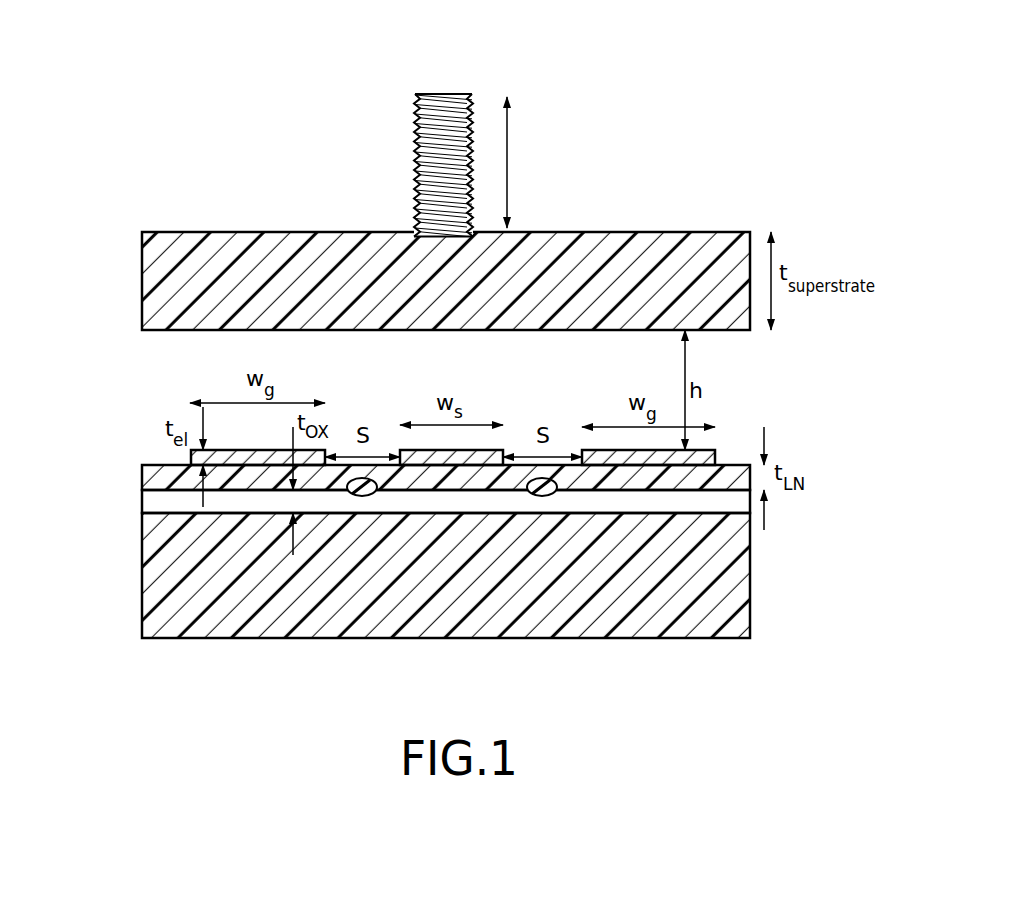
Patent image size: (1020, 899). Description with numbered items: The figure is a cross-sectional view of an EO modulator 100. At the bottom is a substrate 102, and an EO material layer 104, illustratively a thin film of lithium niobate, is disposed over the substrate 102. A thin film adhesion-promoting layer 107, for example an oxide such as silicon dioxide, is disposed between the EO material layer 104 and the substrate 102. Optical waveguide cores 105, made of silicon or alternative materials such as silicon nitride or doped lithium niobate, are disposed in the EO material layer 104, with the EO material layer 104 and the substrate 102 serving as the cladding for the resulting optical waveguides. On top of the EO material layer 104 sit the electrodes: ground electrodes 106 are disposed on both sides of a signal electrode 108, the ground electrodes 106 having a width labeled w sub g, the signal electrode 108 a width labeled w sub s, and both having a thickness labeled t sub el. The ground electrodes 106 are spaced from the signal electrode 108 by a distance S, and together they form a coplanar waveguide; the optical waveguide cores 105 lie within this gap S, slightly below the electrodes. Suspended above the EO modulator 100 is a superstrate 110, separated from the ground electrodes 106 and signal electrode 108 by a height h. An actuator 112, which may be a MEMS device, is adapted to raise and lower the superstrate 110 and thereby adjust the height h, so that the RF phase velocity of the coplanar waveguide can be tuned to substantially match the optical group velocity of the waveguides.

The EO modulator 100 is at (358, 41).
The substrate 102 is at (750, 587).
The EO material layer 104 is at (142, 482).
The optical waveguide cores 105 is at (352, 496).
The ground electrodes 106 is at (191, 460).
The thin film adhesion-promoting layer 107 is at (142, 503).
The signal electrode 108 is at (492, 450).
The superstrate 110 is at (704, 232).
The actuator 112 is at (466, 94).